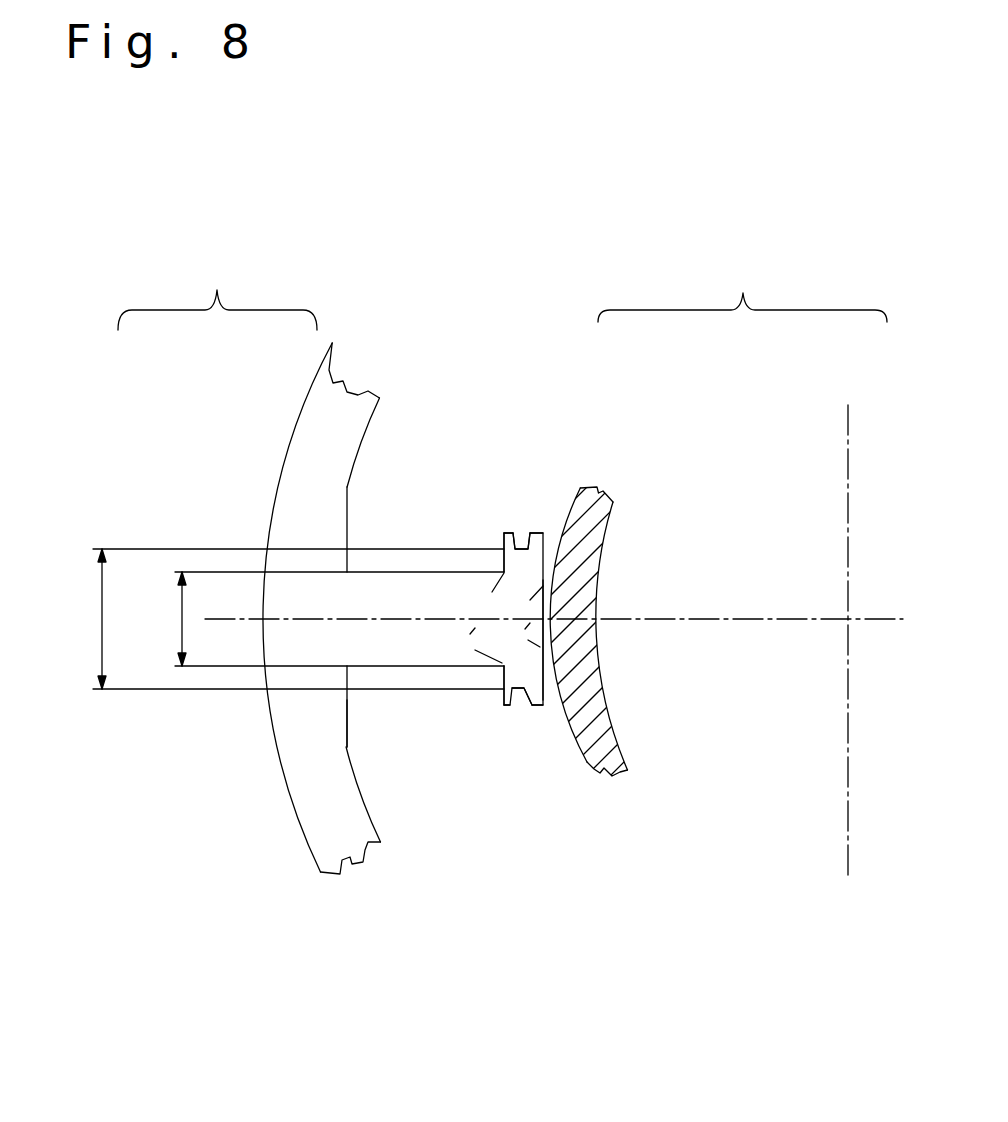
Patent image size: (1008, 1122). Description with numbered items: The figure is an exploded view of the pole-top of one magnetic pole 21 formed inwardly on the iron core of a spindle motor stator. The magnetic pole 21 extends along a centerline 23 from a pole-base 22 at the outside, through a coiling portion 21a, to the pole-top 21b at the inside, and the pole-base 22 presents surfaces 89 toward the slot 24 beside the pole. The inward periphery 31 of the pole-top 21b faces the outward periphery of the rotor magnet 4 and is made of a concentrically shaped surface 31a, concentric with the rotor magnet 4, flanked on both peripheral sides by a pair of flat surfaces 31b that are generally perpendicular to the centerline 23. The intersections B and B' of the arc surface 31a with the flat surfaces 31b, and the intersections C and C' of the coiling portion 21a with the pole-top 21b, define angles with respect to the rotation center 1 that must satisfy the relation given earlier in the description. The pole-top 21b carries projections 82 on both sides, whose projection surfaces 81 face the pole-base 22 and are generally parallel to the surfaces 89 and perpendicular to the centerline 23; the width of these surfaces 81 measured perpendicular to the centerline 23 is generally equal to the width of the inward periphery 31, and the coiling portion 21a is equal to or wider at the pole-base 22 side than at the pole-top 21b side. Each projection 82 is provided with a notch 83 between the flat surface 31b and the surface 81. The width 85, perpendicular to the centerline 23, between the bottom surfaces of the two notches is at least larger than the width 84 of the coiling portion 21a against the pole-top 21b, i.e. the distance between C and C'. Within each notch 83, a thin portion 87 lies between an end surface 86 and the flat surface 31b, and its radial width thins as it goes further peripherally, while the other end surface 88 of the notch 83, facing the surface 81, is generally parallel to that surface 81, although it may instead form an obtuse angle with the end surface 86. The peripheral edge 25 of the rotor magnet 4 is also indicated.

The rotation center 1 is at (850, 620).
The rotor magnet 4 is at (750, 480).
The magnetic pole 21 is at (309, 469).
The coiling portion 21a is at (397, 572).
The pole-top 21b is at (525, 670).
The pole-base 22 is at (340, 827).
The centerline 23 is at (717, 620).
The slot 24 is at (407, 733).
The lens edge 25 is at (542, 732).
The inward periphery 31 is at (718, 514).
The concentrically shaped surface 31a is at (610, 528).
The flat surfaces 31b is at (550, 532).
The projection surfaces 81 is at (513, 567).
The projection 82 is at (504, 532).
The notch 83 is at (523, 546).
The width of coiling portion 84 is at (182, 602).
The width between notch bottom surfaces 85 is at (102, 618).
The end surface 86 is at (531, 533).
The thin portion 87 is at (538, 693).
The end surface 88 is at (514, 533).
The surfaces of pole-base 89 is at (343, 715).